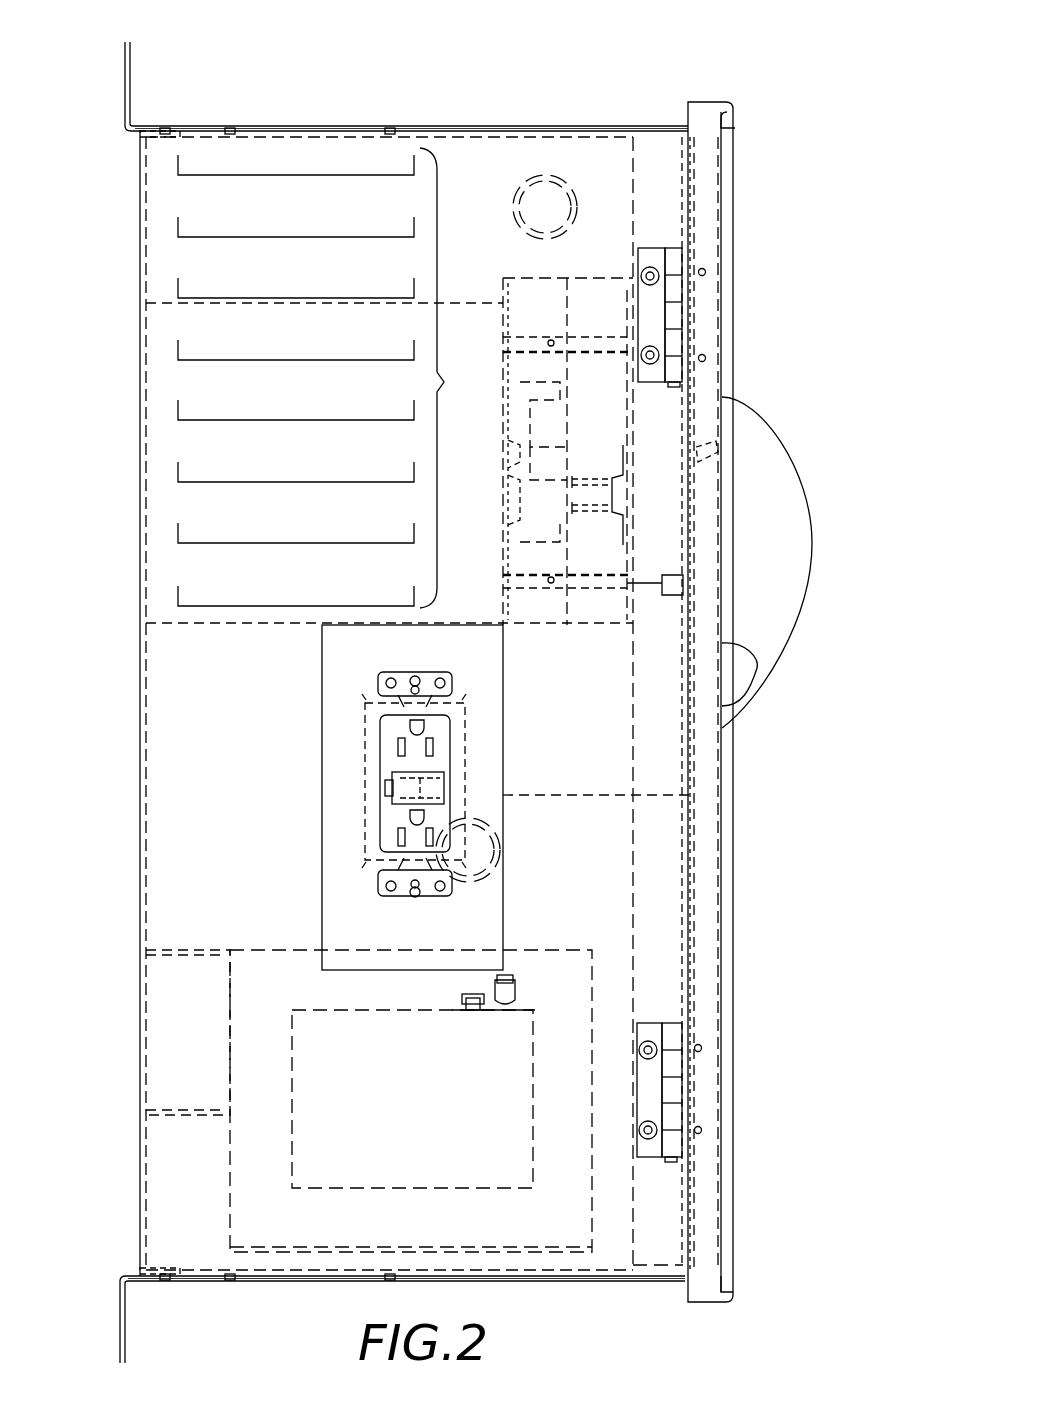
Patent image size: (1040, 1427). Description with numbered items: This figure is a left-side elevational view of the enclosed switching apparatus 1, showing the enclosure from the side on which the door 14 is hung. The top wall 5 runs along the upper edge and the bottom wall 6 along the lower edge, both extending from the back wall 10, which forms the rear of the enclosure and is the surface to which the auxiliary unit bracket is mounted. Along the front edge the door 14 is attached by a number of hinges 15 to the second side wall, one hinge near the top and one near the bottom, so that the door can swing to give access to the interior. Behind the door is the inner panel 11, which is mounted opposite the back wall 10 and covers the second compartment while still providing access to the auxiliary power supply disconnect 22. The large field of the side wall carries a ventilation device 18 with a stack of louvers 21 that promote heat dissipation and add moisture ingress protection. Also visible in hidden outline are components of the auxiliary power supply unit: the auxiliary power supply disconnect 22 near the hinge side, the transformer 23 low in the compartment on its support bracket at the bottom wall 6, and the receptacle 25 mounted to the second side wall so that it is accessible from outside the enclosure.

The enclosed switching apparatus 1 is at (547, 99).
The top wall 5 is at (290, 126).
The bottom wall 6 is at (515, 1283).
The back wall 10 is at (138, 628).
The inner panel 11 is at (692, 850).
The door 14 is at (728, 830).
The hinges 15 is at (660, 258).
The ventilation devices 18 is at (332, 378).
The louvers 21 is at (334, 420).
The auxiliary power supply disconnect 22 is at (666, 448).
The transformer 23 is at (310, 1076).
The receptacle 25 is at (368, 745).